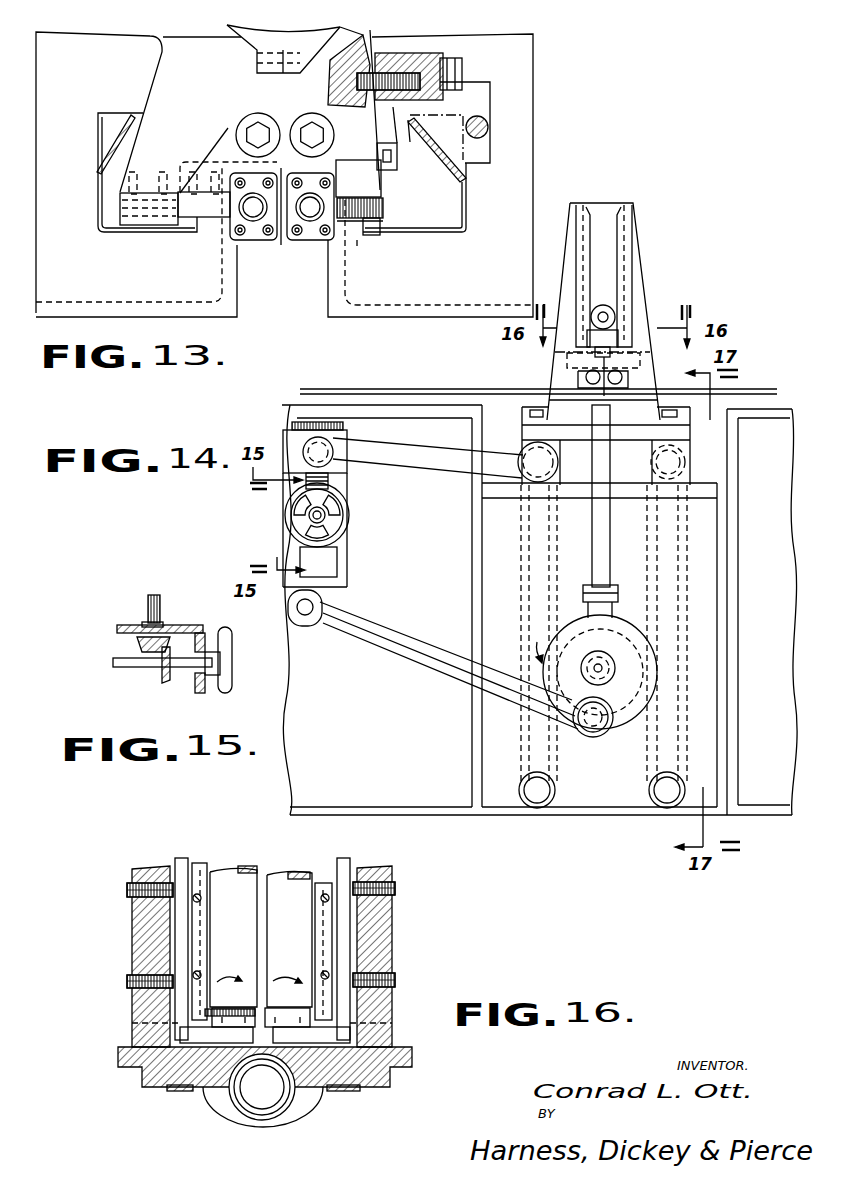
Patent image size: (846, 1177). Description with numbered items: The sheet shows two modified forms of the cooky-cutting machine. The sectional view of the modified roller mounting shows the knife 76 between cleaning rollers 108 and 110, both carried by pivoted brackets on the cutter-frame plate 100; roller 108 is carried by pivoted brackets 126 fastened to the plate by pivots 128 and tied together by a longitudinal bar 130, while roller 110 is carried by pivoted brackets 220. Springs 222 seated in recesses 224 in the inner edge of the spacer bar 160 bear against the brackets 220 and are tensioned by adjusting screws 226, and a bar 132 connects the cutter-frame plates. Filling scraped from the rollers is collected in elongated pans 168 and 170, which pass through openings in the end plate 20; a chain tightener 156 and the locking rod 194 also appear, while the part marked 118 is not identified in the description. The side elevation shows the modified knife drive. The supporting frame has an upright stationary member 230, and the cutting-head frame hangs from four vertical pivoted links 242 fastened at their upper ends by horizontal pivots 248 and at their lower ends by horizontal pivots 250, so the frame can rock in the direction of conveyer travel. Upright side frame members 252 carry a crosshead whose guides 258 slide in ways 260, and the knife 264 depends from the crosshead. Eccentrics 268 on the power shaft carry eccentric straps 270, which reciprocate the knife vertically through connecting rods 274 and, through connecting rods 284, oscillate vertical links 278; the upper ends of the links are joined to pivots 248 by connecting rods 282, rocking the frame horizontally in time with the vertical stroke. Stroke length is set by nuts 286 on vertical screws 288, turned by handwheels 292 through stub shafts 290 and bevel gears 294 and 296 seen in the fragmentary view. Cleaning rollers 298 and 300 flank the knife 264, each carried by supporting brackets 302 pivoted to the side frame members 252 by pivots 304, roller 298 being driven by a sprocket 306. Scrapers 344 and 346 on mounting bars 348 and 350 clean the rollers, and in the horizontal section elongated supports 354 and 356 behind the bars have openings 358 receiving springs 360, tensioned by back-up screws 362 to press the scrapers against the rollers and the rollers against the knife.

In FIG. 13, the cutter-frame plate 100 is at (170, 70).
In FIG. 13, the pivot 128 is at (252, 127).
In FIG. 13, the pivoted bracket 126 is at (228, 128).
In FIG. 13, the feed guide 118 is at (318, 35).
In FIG. 13, the tightener 156 is at (355, 55).
In FIG. 13, the rod 194 is at (487, 124).
In FIG. 13, the end plate 20 is at (520, 138).
In FIG. 13, the pivoted bracket 220 is at (378, 100).
In FIG. 13, the knife 76 is at (293, 178).
In FIG. 13, the roller 110 is at (333, 168).
In FIG. 13, the spring 222 is at (360, 192).
In FIG. 13, the adjusting screw 226 is at (383, 208).
In FIG. 13, the pan 170 is at (467, 198).
In FIG. 13, the bar 160 is at (378, 228).
In FIG. 13, the recess 224 is at (357, 244).
In FIG. 13, the roller 108 is at (253, 217).
In FIG. 13, the longitudinal bar 130 is at (207, 233).
In FIG. 13, the bar 132 is at (130, 222).
In FIG. 13, the pan 168 is at (98, 186).
In FIG. 14, the guide 258 is at (607, 236).
In FIG. 16, the guide 258 is at (260, 1127).
In FIG. 14, the way 260 is at (628, 262).
In FIG. 16, the way 260 is at (307, 1088).
In FIG. 14, the knife 264 is at (640, 363).
In FIG. 14, the cleaning roller 298 is at (583, 379).
In FIG. 16, the cleaning roller 298 is at (230, 870).
In FIG. 14, the cleaning roller 300 is at (640, 388).
In FIG. 16, the cleaning roller 300 is at (288, 877).
In FIG. 14, the vertical screw 288 is at (292, 423).
In FIG. 15, the vertical screw 288 is at (148, 606).
In FIG. 14, the nut 286 is at (286, 440).
In FIG. 14, the connecting rod 282 is at (390, 448).
In FIG. 14, the horizontal pivot 248 is at (527, 449).
In FIG. 14, the handwheel 292 is at (348, 509).
In FIG. 15, the handwheel 292 is at (226, 694).
In FIG. 14, the stub shaft 290 is at (309, 515).
In FIG. 15, the stub shaft 290 is at (186, 667).
In FIG. 14, the vertical link 278 is at (290, 553).
In FIG. 14, the connecting rod 274 is at (596, 545).
In FIG. 14, the upright stationary member 230 is at (711, 558).
In FIG. 14, the vertical pivoted link 242 is at (533, 592).
In FIG. 14, the eccentric strap 270 is at (640, 651).
In FIG. 14, the connecting rod 284 is at (390, 655).
In FIG. 14, the eccentric 268 is at (627, 730).
In FIG. 14, the horizontal pivot 250 is at (540, 800).
In FIG. 15, the bevel gear 296 is at (138, 641).
In FIG. 15, the bevel gear 294 is at (162, 677).
In FIG. 16, the spring 360 is at (173, 863).
In FIG. 16, the mounting bar 348 is at (193, 858).
In FIG. 16, the mounting bar 350 is at (328, 863).
In FIG. 16, the opening 358 is at (388, 868).
In FIG. 16, the back-up screw 362 is at (393, 890).
In FIG. 16, the elongated support 356 is at (377, 935).
In FIG. 16, the elongated support 354 is at (138, 928).
In FIG. 16, the scraper 344 is at (200, 931).
In FIG. 16, the scraper 346 is at (323, 947).
In FIG. 16, the sprocket 306 is at (205, 1013).
In FIG. 16, the supporting bracket 302 is at (180, 1035).
In FIG. 16, the side frame member 252 is at (412, 1053).
In FIG. 16, the pivot 304 is at (205, 1088).